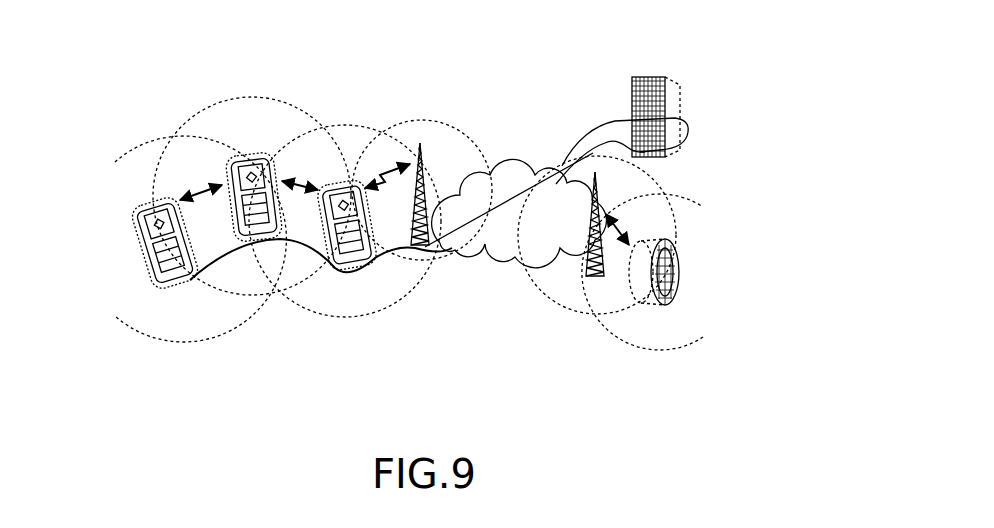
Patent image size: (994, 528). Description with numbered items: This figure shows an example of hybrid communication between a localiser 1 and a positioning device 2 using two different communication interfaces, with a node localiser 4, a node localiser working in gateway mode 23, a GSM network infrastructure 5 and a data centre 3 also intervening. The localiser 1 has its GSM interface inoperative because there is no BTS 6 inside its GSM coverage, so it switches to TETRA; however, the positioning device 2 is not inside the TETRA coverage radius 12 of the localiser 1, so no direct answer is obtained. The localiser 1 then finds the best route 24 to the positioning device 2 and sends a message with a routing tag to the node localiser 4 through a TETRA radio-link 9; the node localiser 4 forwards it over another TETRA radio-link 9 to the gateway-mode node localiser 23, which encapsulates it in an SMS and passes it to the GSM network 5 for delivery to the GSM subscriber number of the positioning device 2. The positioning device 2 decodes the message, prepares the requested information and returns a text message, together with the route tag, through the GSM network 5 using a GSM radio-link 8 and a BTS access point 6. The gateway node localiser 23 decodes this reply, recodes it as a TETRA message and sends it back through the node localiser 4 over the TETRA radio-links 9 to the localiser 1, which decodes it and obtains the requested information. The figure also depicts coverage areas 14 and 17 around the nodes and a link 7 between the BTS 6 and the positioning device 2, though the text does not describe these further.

The localiser 1 is at (160, 282).
The positioning device 2 is at (680, 288).
The data centre 3 is at (660, 79).
The node localiser 4 is at (245, 157).
The GSM network infrastructure 5 is at (518, 172).
The BTS access point 6 is at (422, 246).
The short-range communication link 7 is at (606, 214).
The GSM radio-link 8 is at (400, 166).
The TETRA radio-link 9 is at (194, 186).
The TETRA coverage radius 12 is at (142, 148).
The base station coverage area 14 is at (452, 125).
The communication range of second terminal 17 is at (277, 100).
The node localiser in gateway mode 23 is at (340, 277).
The best route 24 is at (237, 253).